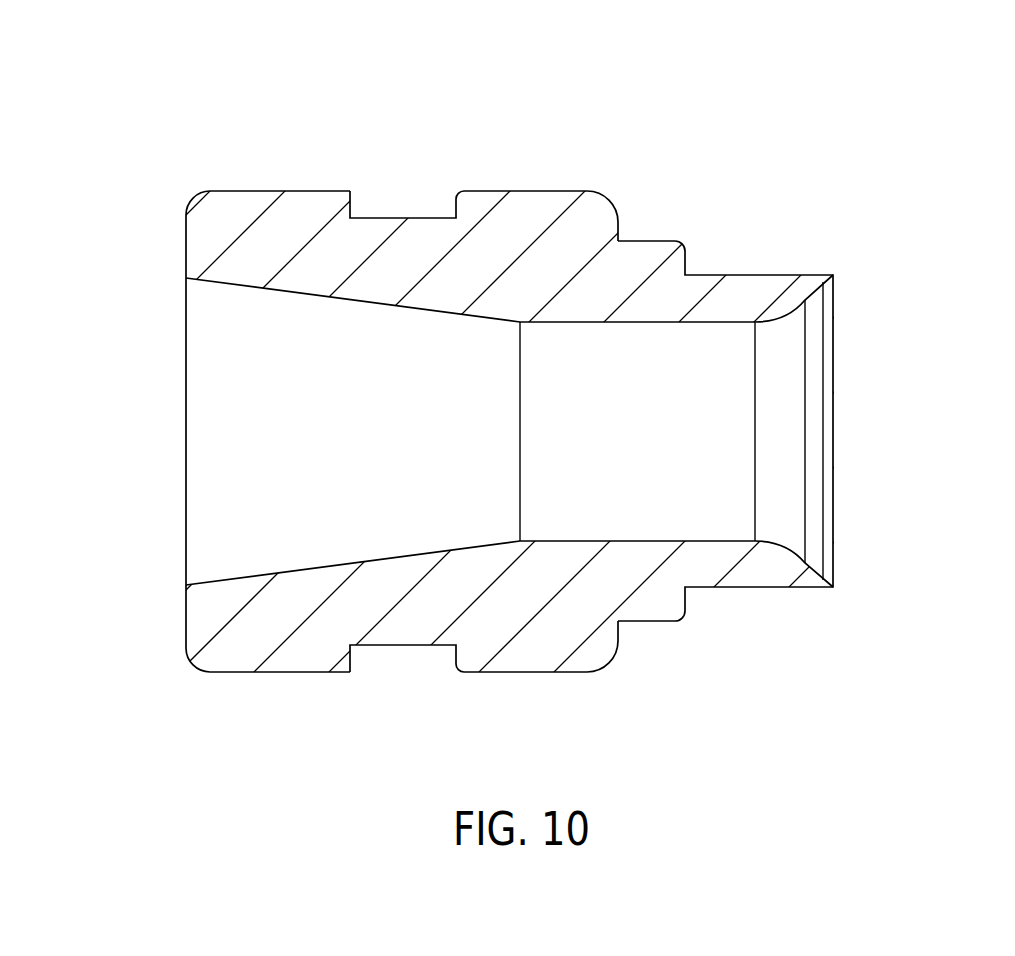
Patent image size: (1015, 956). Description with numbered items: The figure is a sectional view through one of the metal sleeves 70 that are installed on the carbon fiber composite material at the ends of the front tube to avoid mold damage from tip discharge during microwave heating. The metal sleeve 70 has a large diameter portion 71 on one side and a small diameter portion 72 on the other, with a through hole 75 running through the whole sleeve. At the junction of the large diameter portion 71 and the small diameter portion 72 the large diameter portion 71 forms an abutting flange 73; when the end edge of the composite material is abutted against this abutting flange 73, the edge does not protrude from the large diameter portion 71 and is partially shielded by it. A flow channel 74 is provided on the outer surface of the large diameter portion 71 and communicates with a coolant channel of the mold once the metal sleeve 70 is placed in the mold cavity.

The metal sleeve 70 is at (507, 362).
The large diameter portion 71 is at (537, 215).
The small diameter portion 72 is at (666, 278).
The abutting flange 73 is at (618, 223).
The flow channel 74 is at (383, 217).
The through hole 75 is at (780, 433).